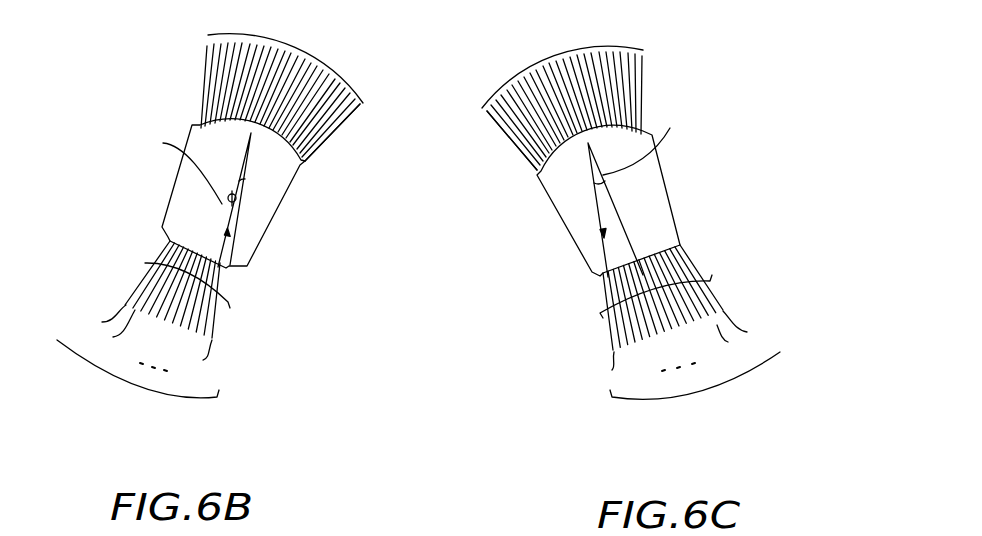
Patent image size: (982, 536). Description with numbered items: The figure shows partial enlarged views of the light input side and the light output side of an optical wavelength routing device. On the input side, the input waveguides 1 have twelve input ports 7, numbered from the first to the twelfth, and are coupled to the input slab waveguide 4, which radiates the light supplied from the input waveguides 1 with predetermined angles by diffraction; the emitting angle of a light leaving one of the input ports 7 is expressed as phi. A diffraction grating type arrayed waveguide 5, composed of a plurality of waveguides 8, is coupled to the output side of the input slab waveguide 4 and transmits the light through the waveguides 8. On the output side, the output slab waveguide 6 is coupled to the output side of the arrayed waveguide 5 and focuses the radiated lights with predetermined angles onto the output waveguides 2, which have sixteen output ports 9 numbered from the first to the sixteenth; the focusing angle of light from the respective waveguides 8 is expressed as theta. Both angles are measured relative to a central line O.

In FIG. 6B, the input waveguides 1 is at (155, 258).
In FIG. 6C, the output waveguides 2 is at (706, 275).
In FIG. 6B, the input slab waveguide 4 is at (277, 222).
In FIG. 6B, the arrayed waveguide 5 is at (290, 43).
In FIG. 6C, the arrayed waveguide 5 is at (607, 43).
In FIG. 6C, the output slab waveguide 6 is at (667, 183).
In FIG. 6B, the input ports 7 is at (138, 405).
In FIG. 6B, the waveguides 8 is at (327, 132).
In FIG. 6C, the waveguides 8 is at (498, 128).
In FIG. 6C, the output ports 9 is at (695, 413).